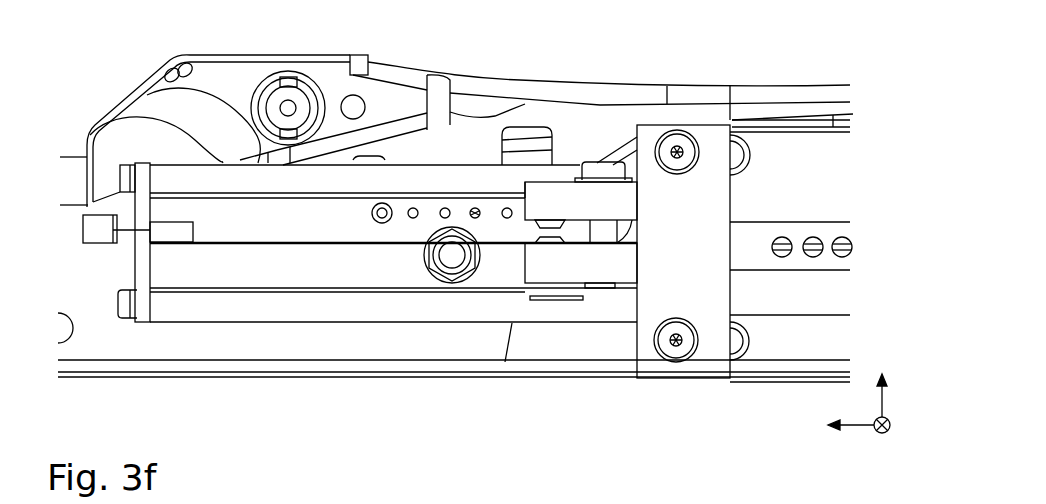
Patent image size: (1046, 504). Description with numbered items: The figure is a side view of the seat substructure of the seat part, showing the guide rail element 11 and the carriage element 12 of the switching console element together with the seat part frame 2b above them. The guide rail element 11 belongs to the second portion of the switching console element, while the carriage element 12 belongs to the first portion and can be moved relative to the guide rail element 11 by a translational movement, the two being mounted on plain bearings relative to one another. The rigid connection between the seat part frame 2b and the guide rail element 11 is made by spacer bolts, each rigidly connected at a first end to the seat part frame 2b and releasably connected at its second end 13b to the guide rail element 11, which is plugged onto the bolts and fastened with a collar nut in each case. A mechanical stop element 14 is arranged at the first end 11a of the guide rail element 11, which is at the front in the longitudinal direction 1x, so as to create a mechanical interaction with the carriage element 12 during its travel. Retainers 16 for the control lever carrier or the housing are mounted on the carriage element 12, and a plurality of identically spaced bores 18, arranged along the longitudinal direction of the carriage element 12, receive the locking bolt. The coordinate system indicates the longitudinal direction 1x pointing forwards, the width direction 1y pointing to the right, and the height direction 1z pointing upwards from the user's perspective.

The seat part frame 2b is at (520, 78).
The retainer 16 is at (698, 80).
The carriage element 12 is at (815, 135).
The guide rail element 11 is at (260, 273).
The first end of the guide rail element 11a is at (140, 315).
The mechanical stop element 14 is at (382, 223).
The second end of the spacer bolt 13b is at (447, 258).
The bore 18 is at (782, 257).
The longitudinal direction 1x is at (860, 425).
The width direction 1y is at (882, 440).
The height direction 1z is at (882, 408).